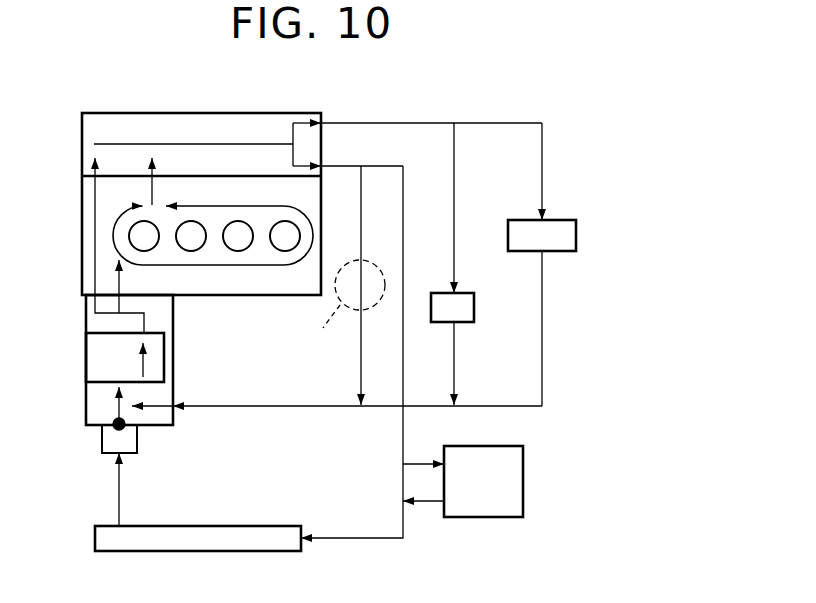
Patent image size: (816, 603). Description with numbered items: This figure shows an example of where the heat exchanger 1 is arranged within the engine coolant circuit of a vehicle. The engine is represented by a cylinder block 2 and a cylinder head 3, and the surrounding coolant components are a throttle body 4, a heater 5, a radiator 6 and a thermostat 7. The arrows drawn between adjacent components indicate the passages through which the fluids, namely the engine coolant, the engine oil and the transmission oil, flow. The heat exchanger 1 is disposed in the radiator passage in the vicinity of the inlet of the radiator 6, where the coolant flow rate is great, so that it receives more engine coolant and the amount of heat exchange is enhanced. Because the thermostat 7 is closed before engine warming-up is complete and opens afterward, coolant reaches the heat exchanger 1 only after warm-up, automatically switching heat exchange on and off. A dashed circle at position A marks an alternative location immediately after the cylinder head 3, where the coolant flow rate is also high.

The heat exchanger 1 is at (523, 481).
The cylinder block 2 is at (82, 193).
The cylinder head 3 is at (128, 113).
The throttle body 4 is at (474, 311).
The heater 5 is at (576, 236).
The radiator 6 is at (243, 526).
The thermostat 7 is at (86, 402).
The alternative arrangement position A is at (343, 285).